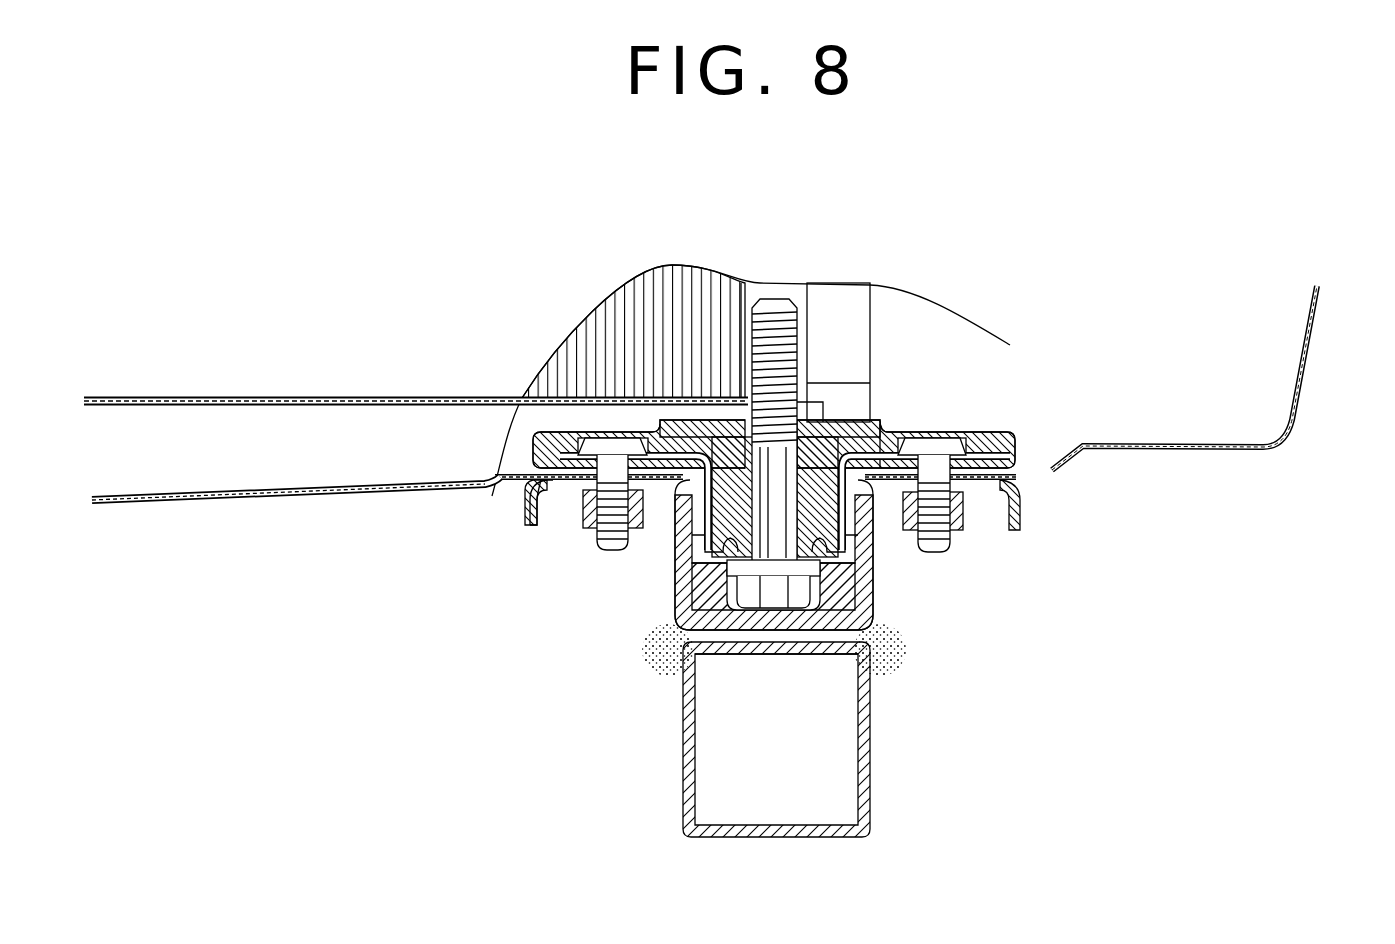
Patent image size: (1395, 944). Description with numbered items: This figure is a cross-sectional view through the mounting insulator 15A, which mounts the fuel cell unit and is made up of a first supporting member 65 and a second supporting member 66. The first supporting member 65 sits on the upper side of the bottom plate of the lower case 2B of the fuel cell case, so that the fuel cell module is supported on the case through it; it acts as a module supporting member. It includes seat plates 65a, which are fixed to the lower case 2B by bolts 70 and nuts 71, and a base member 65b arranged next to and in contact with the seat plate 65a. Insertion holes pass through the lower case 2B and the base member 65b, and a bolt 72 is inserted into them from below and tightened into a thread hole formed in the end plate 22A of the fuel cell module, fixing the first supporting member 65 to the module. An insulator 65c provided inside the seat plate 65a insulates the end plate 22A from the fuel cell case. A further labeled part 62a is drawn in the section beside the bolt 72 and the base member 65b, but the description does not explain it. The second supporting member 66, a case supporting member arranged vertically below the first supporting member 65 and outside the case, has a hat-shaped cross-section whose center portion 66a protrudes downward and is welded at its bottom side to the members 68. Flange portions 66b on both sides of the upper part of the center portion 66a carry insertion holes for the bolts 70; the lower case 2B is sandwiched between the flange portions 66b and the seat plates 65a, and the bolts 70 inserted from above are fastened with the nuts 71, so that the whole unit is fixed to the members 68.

The lower case 2B is at (1312, 360).
The mounting insulator 15A is at (990, 302).
The end plate 22A is at (766, 290).
The mounting plate 62a is at (878, 497).
The first supporting member 65 is at (975, 432).
The seat plate 65a is at (657, 432).
The base member 65b is at (866, 548).
The insulator 65c is at (695, 525).
The second supporting member 66 is at (668, 600).
The center portion 66a is at (764, 642).
The flange portion 66b is at (555, 495).
The member 68 is at (868, 813).
The bolt 70 is at (610, 553).
The nut 71 is at (583, 495).
The bolt 72 is at (772, 300).